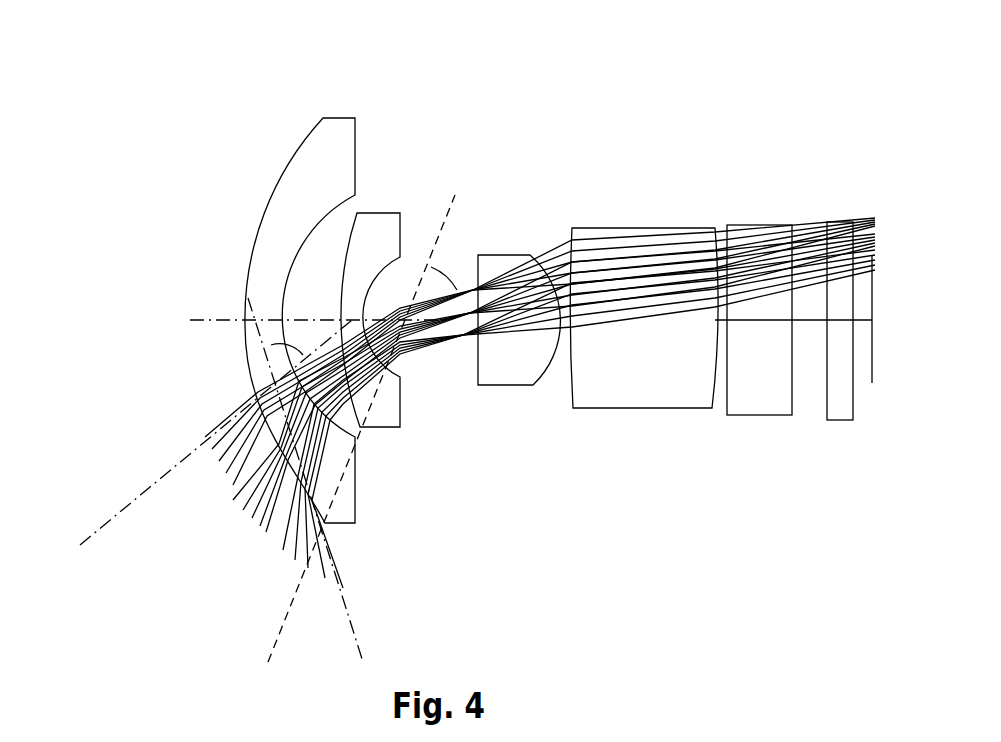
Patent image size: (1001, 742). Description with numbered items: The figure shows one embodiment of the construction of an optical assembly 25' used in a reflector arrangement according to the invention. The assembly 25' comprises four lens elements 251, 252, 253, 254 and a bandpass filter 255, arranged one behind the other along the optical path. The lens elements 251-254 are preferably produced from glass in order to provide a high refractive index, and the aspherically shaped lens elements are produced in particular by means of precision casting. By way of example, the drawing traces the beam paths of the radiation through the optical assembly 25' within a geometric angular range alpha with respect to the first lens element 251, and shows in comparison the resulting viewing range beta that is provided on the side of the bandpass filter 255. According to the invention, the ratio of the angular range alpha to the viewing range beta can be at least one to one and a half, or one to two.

The optical assembly 25' is at (501, 340).
The lens element 251 is at (340, 117).
The lens element 252 is at (367, 210).
The lens element 253 is at (493, 255).
The lens element 254 is at (648, 228).
The bandpass filter 255 is at (810, 435).